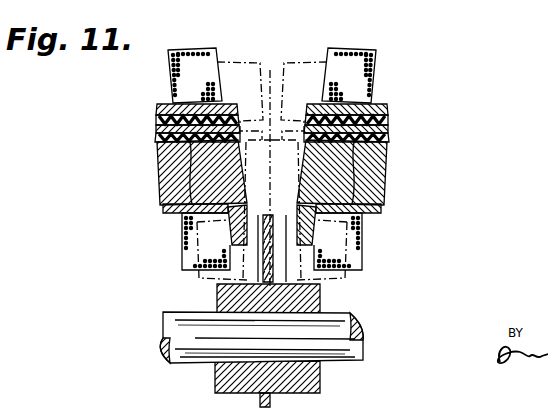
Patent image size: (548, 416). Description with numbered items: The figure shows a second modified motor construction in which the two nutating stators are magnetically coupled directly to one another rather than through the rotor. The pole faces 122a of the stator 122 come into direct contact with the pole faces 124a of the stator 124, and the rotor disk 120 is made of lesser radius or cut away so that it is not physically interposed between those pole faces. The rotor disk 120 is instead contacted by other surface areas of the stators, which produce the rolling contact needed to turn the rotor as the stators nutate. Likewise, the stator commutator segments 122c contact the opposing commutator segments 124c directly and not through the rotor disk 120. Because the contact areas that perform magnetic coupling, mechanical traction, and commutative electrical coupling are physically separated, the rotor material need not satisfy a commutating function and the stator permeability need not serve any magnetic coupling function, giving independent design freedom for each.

The rotor disk 120 is at (277, 239).
The stator 122 is at (384, 87).
The pole faces 122a is at (303, 175).
The stator commutator segments 122c is at (314, 102).
The stator 124 is at (198, 47).
The pole faces 124a is at (237, 170).
The commutator segments 124c is at (229, 104).